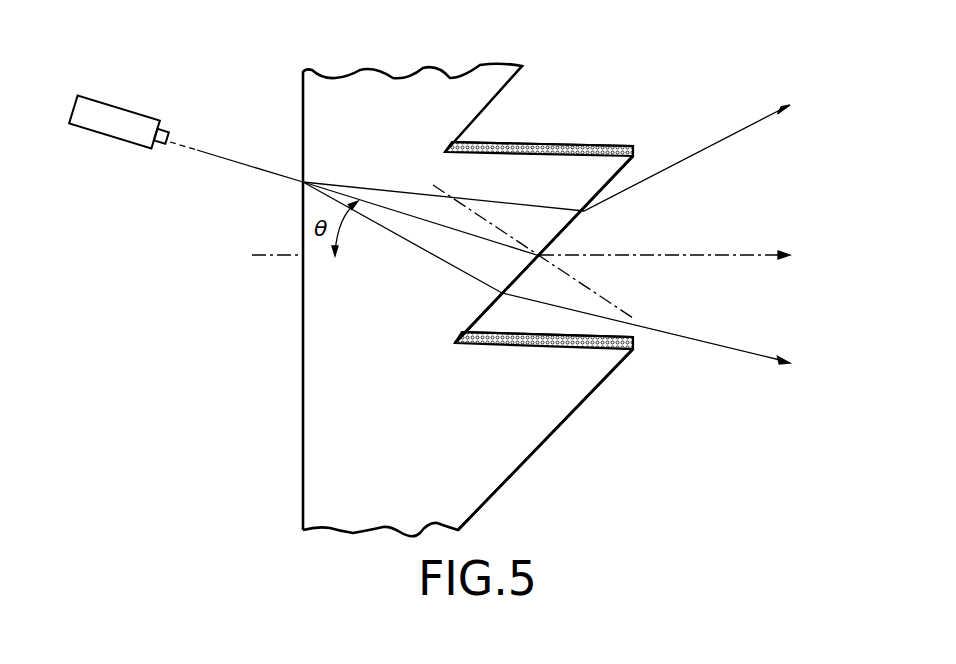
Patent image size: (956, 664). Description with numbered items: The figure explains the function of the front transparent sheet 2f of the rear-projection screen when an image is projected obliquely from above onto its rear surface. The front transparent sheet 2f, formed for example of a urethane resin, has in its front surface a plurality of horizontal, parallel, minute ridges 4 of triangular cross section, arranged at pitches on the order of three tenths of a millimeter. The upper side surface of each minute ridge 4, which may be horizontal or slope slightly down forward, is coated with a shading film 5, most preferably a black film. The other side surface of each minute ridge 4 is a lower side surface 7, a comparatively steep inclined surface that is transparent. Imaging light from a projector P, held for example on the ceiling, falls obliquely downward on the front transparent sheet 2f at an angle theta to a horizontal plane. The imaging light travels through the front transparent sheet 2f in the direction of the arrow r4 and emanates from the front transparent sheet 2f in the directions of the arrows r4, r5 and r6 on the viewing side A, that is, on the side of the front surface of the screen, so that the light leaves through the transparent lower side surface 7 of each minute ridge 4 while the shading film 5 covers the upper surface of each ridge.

The front transparent sheet 2f is at (450, 66).
The shading film 5 is at (567, 142).
The lower side surface 7 is at (574, 222).
The minute ridge 4 is at (557, 407).
The projector P is at (112, 131).
The arrow r4 is at (466, 234).
The arrow r5 is at (683, 160).
The arrow r6 is at (686, 337).
The viewing side A is at (862, 335).